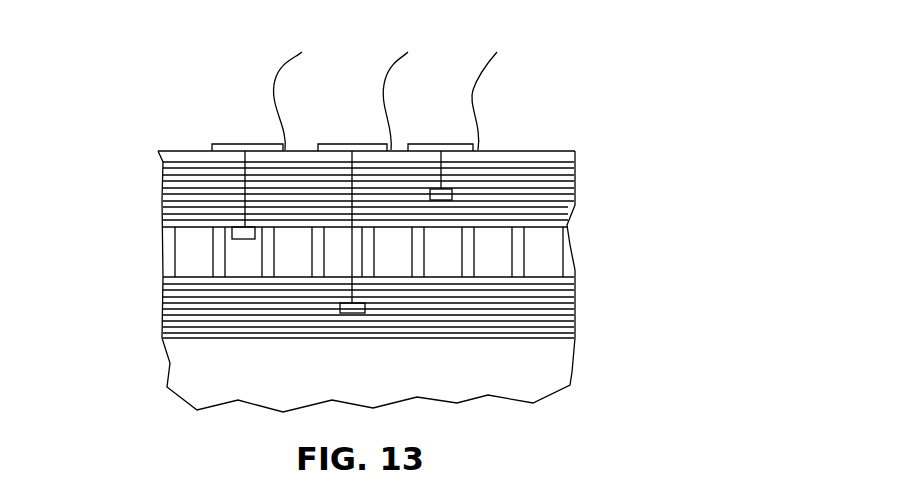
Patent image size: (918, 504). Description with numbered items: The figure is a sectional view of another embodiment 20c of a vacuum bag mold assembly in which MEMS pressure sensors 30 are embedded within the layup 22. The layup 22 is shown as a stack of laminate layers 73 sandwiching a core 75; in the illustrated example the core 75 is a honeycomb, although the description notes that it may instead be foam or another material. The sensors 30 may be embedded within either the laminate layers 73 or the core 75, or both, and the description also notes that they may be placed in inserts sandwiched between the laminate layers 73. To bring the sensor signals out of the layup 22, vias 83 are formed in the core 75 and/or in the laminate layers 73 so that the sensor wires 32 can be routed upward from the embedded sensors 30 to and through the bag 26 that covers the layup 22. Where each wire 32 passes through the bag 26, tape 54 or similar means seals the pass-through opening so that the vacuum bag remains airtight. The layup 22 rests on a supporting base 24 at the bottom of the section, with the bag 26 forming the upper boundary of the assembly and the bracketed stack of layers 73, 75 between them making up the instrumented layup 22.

The vacuum bag mold assembly 20c is at (134, 119).
The layup 22 is at (592, 162).
The substrate 24 is at (185, 380).
The bag 26 is at (185, 158).
The MEMS sensors 30 is at (243, 239).
The sensor wires 32 is at (473, 90).
The tape 54 is at (244, 150).
The laminate layers 73 is at (180, 200).
The core 75 is at (187, 255).
The vias 83 is at (340, 246).